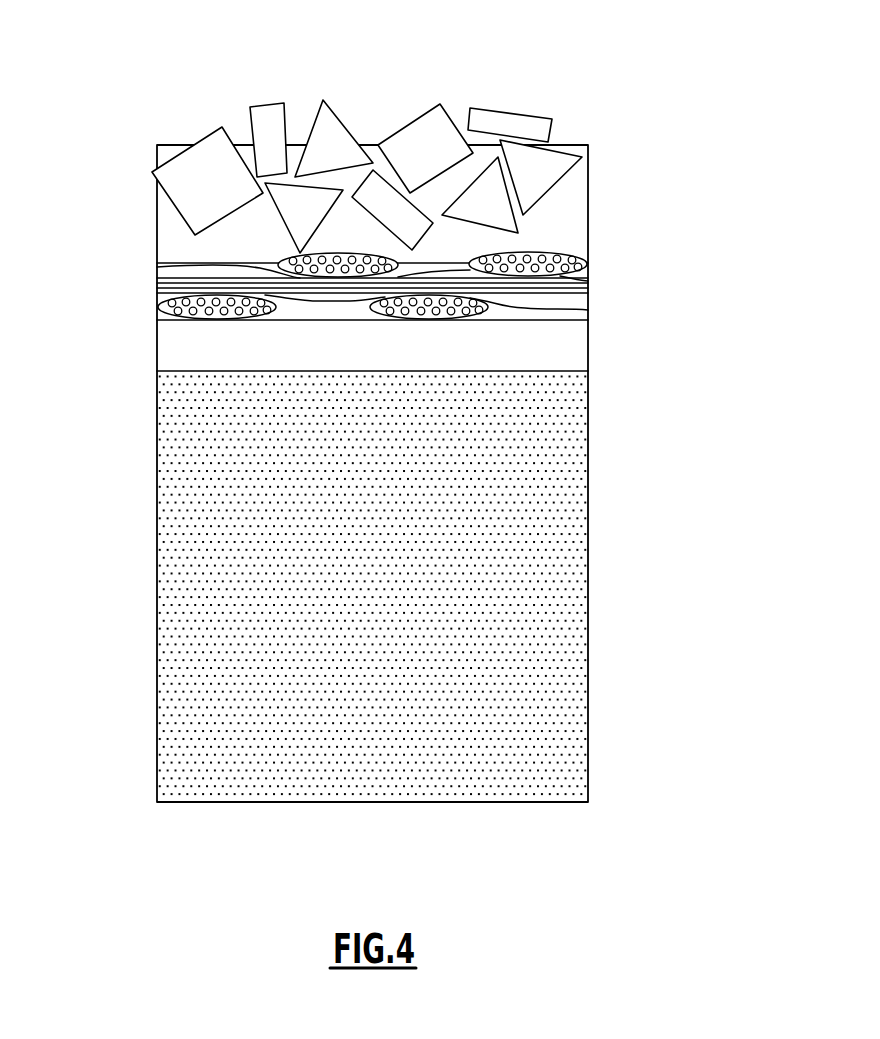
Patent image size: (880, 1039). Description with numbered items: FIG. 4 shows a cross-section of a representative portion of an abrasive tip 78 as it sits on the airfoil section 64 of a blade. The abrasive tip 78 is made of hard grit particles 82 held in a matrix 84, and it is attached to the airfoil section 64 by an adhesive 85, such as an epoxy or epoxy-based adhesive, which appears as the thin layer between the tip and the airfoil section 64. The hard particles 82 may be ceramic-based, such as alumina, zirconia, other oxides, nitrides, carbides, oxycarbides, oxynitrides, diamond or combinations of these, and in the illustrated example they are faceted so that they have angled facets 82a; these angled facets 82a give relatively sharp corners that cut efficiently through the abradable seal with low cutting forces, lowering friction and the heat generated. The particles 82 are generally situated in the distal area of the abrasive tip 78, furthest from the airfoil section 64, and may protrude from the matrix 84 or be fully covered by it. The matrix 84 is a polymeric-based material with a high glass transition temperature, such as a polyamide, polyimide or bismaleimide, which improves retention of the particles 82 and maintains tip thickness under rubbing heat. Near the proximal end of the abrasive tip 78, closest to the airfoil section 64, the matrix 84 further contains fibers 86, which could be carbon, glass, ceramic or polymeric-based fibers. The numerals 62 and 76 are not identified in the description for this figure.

The coated component 62 is at (647, 530).
The airfoil section 64 is at (386, 554).
The interface between substrate and coating 76 is at (153, 371).
The abrasive tip 78 is at (713, 100).
The hard particles 82 is at (417, 148).
The angled facets 82a is at (266, 104).
The matrix 84 is at (173, 236).
The adhesive 85 is at (565, 346).
The fibers 86 is at (173, 278).